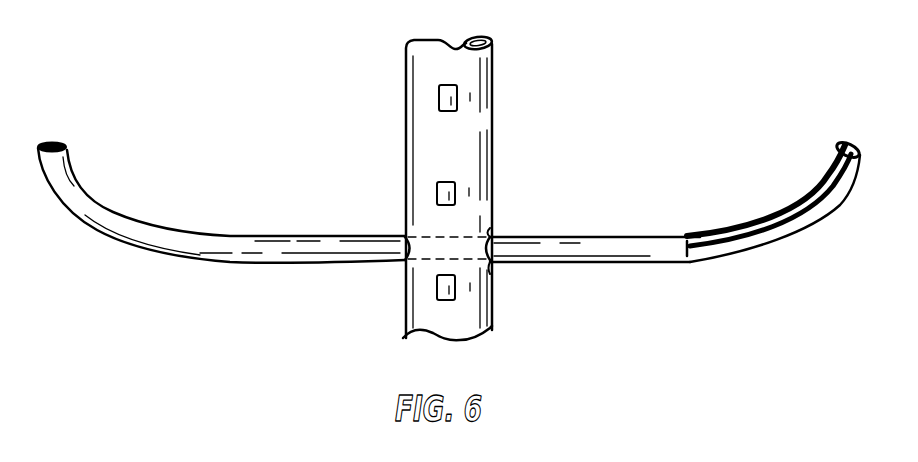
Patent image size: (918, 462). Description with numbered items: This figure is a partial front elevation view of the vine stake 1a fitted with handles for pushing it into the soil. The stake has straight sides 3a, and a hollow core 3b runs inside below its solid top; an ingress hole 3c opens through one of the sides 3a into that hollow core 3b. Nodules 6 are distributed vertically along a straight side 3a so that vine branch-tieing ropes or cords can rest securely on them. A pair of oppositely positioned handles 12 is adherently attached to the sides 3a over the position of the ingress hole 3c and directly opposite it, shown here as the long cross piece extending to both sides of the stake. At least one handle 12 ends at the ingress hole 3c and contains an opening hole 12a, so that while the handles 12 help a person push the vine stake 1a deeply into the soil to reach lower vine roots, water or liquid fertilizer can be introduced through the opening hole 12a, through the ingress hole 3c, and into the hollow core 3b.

The vine stake 1a is at (600, 90).
The straight sides 3a is at (491, 191).
The hollow core 3b is at (493, 39).
The ingress hole 3c is at (490, 223).
The nodules 6 is at (458, 101).
The handles 12 is at (798, 238).
The opening hole 12a is at (490, 279).